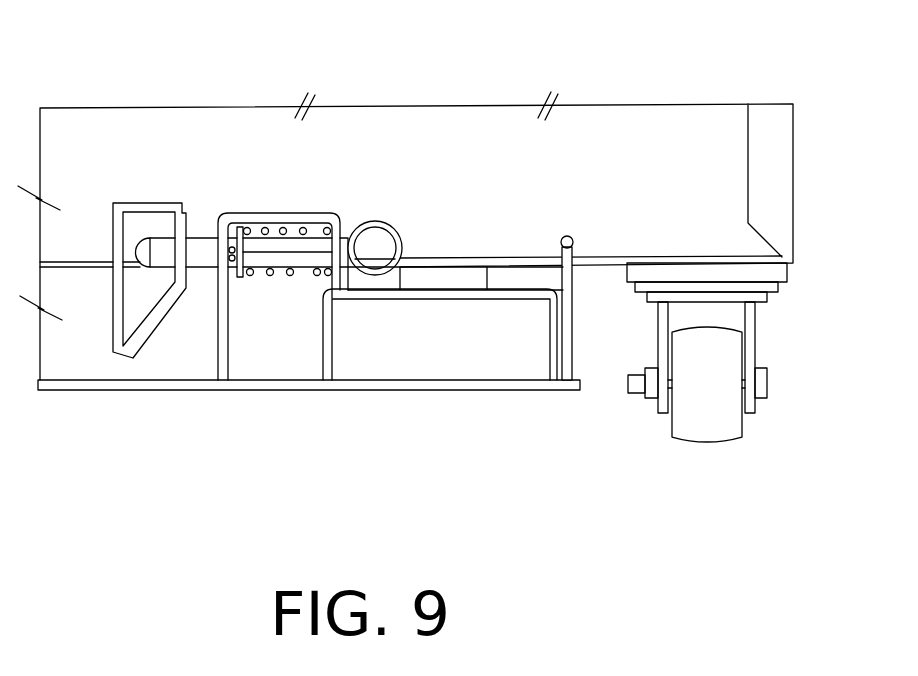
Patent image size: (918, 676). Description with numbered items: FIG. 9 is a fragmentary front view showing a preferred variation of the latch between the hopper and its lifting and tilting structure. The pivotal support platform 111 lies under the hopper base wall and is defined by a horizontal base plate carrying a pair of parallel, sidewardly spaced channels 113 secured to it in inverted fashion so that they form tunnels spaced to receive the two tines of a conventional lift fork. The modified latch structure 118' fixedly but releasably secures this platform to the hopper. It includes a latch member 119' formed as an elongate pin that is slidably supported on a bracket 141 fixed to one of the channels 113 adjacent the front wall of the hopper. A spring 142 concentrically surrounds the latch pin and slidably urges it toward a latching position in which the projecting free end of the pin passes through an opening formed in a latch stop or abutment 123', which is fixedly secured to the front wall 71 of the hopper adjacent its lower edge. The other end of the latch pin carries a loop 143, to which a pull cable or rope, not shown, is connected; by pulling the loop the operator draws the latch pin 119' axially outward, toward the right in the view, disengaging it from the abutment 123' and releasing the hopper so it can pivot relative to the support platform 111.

The front wall 71 is at (425, 135).
The pivotal support platform 111 is at (336, 404).
The channels 113 is at (335, 343).
The latch structure 118' is at (194, 150).
The latch member 119' is at (280, 369).
The latch stop or abutment 123' is at (105, 346).
The bracket 141 is at (220, 328).
The spring 142 is at (266, 229).
The loop 143 is at (400, 243).